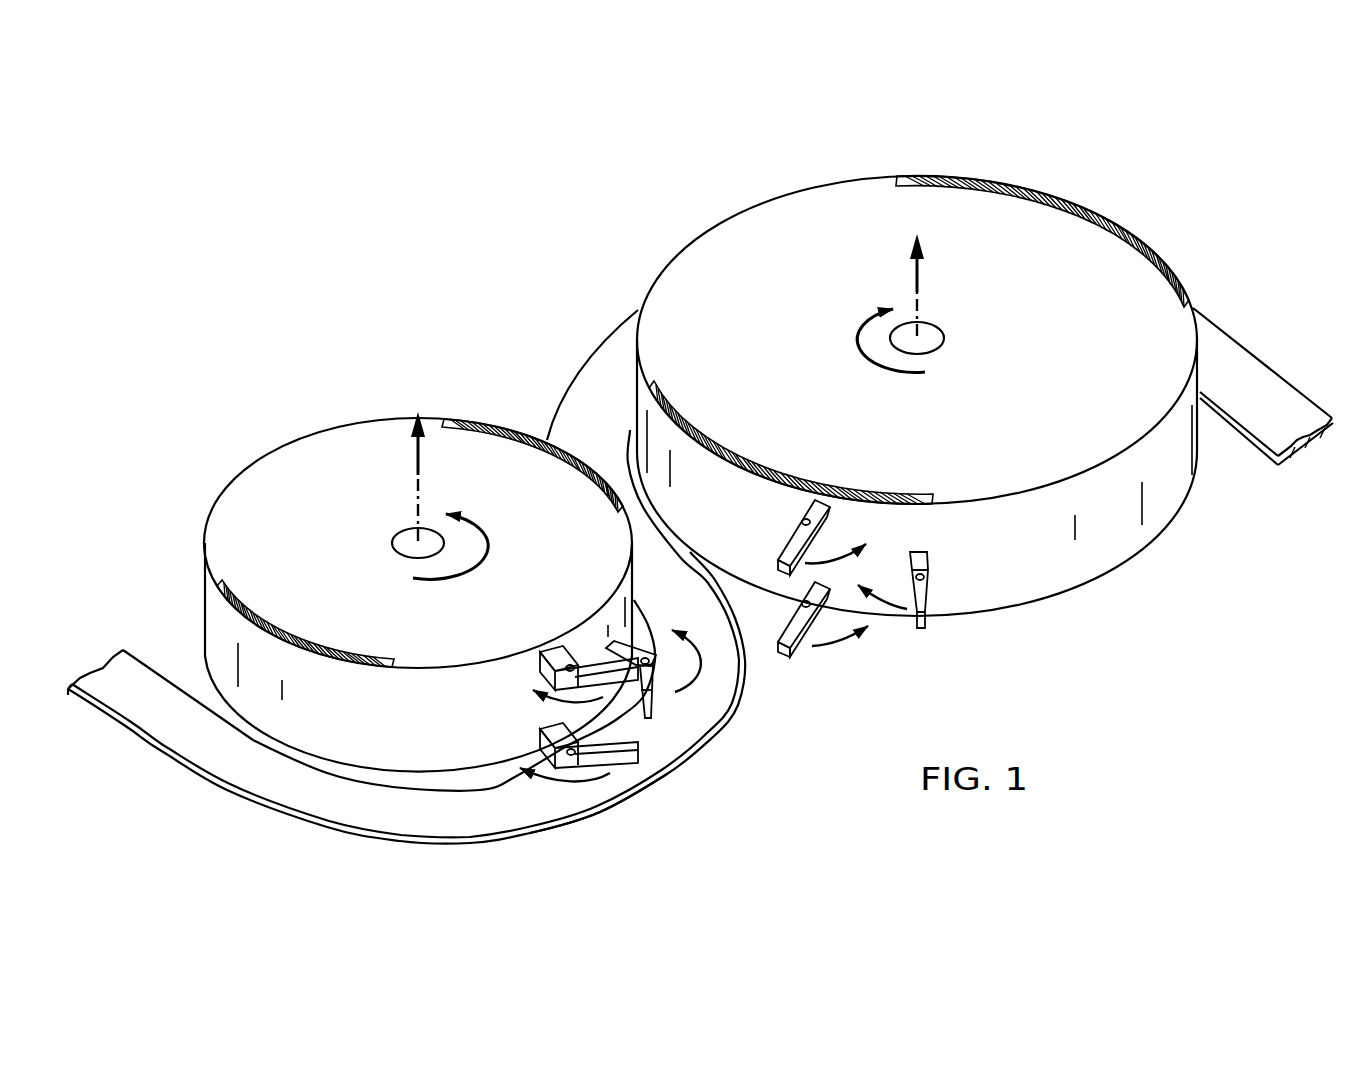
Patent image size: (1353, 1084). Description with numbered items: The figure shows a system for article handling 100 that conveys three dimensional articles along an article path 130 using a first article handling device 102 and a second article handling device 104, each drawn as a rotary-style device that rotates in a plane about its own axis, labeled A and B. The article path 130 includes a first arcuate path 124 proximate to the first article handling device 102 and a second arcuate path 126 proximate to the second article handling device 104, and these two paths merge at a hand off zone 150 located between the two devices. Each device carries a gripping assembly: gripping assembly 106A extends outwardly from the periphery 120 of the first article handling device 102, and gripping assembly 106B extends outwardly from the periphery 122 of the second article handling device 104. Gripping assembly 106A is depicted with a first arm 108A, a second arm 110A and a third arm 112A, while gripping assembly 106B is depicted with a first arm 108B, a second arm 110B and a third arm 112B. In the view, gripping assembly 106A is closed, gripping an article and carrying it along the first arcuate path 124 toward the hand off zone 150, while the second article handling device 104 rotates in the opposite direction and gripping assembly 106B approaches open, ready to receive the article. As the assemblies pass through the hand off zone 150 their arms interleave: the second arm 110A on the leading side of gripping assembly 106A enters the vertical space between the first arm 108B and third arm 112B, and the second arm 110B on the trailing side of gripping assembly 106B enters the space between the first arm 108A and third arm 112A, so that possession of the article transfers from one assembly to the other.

The system for article handling 100 is at (435, 219).
The first article handling device 102 is at (293, 417).
The second article handling device 104 is at (714, 205).
The gripping assembly 106A is at (577, 610).
The gripping assembly 106B is at (905, 655).
The first arm 108A is at (545, 657).
The first arm 108B is at (785, 546).
The second arm 110A is at (657, 713).
The second arm 110B is at (932, 565).
The third arm 112A is at (540, 740).
The third arm 112B is at (793, 648).
The periphery 120 is at (205, 594).
The periphery 122 is at (1099, 580).
The first arcuate path 124 is at (676, 781).
The second arcuate path 126 is at (601, 329).
The article path 130 is at (188, 793).
The hand off zone 150 is at (535, 372).